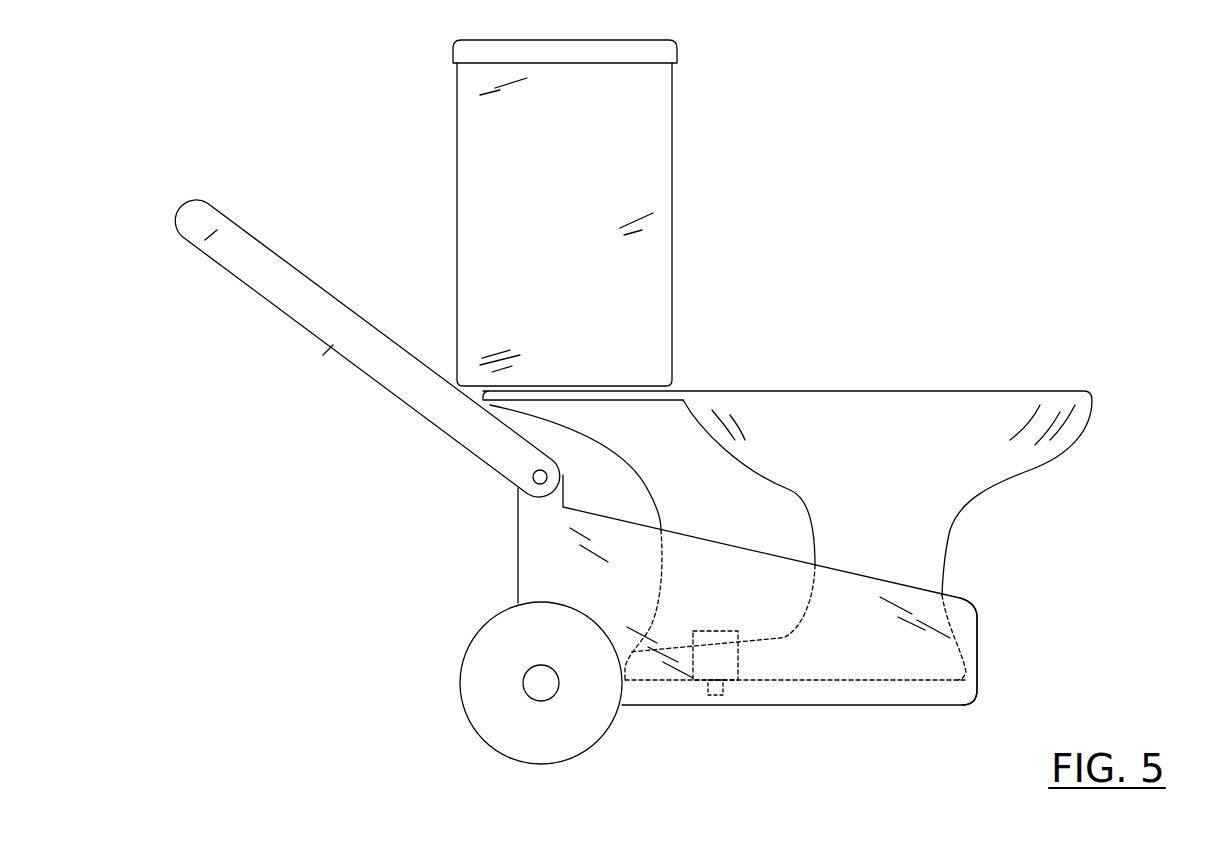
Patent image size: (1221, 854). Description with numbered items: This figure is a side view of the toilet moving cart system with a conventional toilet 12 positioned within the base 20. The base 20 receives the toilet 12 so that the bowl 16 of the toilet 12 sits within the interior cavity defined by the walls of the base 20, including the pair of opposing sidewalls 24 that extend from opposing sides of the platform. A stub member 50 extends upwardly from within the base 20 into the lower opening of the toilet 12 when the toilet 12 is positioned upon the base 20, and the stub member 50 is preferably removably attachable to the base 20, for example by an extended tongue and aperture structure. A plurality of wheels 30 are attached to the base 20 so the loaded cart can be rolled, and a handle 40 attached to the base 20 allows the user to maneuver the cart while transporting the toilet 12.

The toilet 12 is at (682, 130).
The bowl 16 is at (882, 410).
The base 20 is at (916, 573).
The sidewall 24 is at (967, 632).
The wheel 30 is at (585, 738).
The handle 40 is at (335, 338).
The stub member 50 is at (728, 673).